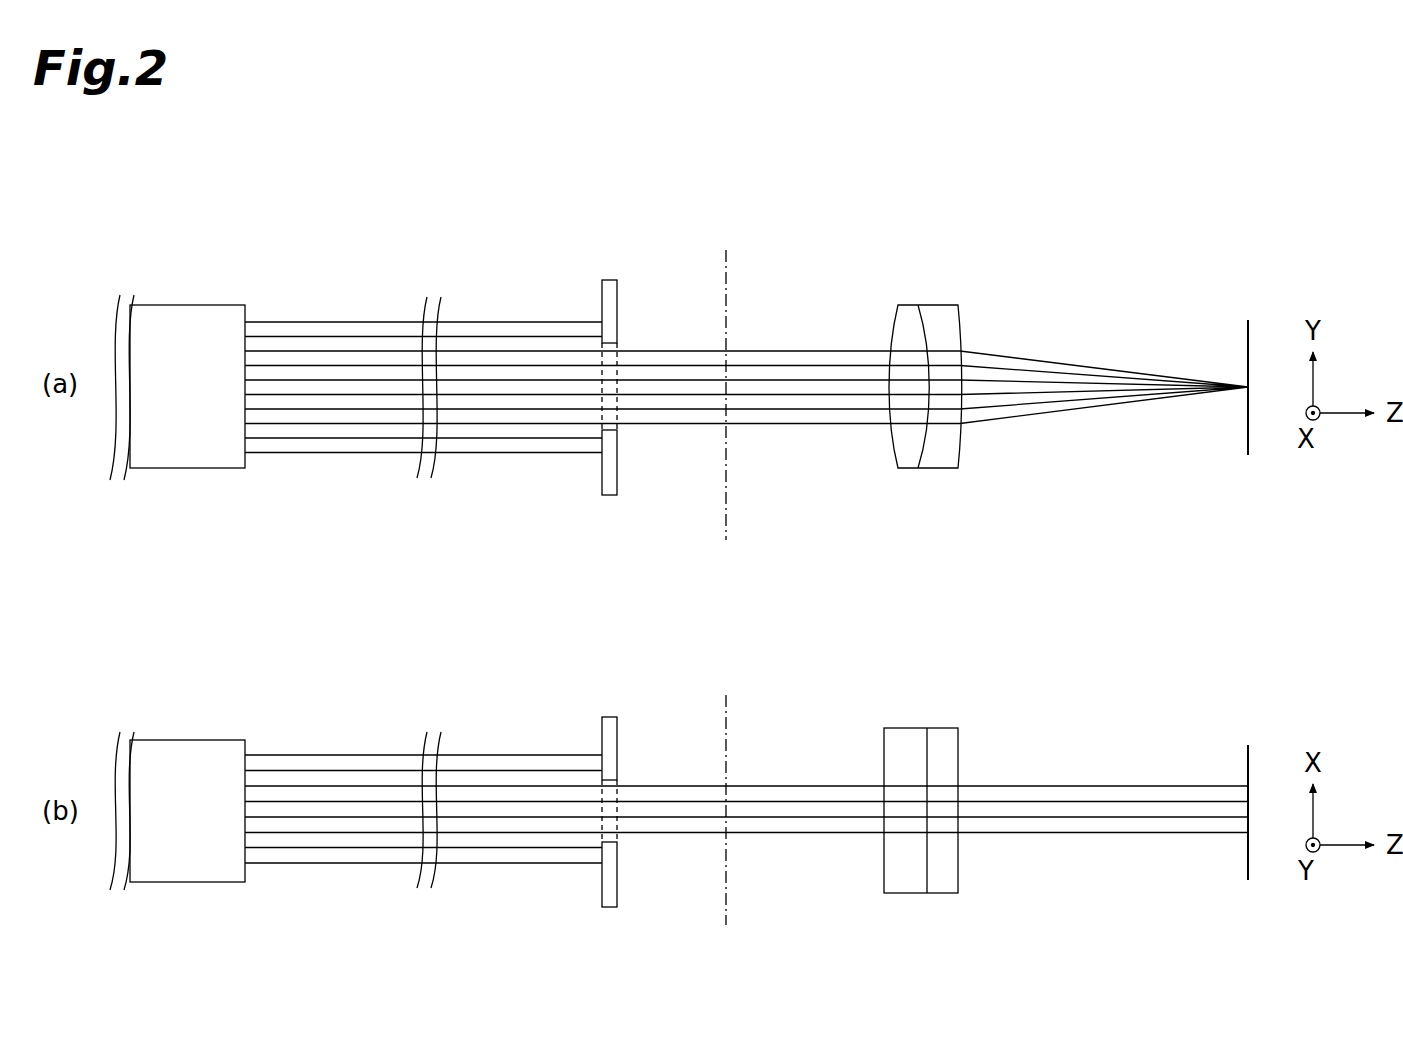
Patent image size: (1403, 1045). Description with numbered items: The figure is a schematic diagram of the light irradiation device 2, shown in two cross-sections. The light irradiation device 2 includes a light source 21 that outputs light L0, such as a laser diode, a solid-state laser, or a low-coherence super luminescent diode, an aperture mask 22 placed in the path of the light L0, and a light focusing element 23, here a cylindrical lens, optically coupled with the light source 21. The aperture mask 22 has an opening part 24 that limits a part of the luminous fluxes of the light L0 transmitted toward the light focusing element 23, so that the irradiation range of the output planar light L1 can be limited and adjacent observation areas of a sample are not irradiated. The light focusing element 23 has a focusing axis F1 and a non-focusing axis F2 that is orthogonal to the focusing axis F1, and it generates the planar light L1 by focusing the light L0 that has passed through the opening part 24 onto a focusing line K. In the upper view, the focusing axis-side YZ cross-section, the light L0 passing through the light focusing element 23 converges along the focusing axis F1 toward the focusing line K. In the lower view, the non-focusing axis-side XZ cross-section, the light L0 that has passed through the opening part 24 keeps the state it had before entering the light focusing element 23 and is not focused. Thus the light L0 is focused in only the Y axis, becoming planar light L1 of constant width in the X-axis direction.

The light irradiation device 2 is at (153, 250).
The light source 21 is at (193, 305).
The aperture mask 22 is at (618, 290).
The light focusing element 23 is at (943, 320).
The opening part 24 is at (612, 358).
The light L0 is at (345, 290).
The planar light L1 is at (1240, 395).
The focusing axis F1 is at (726, 268).
The non-focusing axis F2 is at (726, 705).
The focusing line K is at (1248, 337).